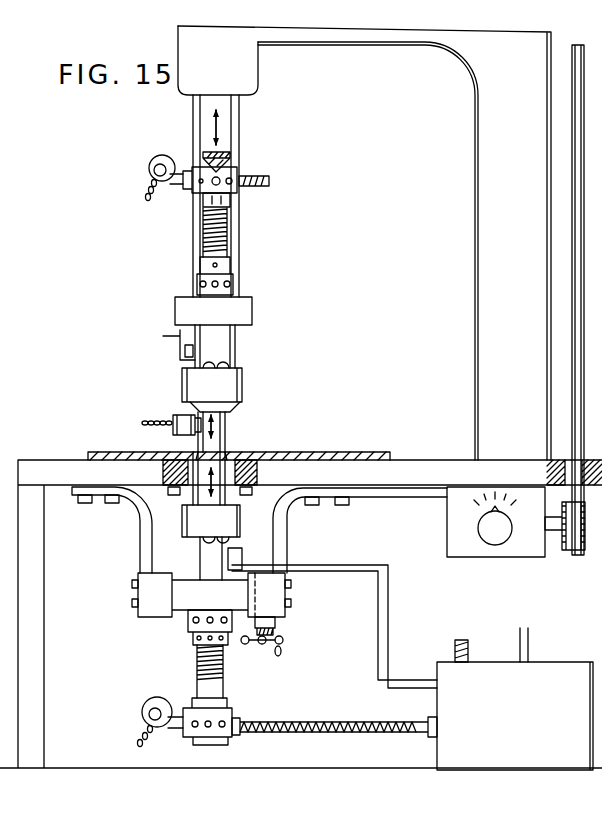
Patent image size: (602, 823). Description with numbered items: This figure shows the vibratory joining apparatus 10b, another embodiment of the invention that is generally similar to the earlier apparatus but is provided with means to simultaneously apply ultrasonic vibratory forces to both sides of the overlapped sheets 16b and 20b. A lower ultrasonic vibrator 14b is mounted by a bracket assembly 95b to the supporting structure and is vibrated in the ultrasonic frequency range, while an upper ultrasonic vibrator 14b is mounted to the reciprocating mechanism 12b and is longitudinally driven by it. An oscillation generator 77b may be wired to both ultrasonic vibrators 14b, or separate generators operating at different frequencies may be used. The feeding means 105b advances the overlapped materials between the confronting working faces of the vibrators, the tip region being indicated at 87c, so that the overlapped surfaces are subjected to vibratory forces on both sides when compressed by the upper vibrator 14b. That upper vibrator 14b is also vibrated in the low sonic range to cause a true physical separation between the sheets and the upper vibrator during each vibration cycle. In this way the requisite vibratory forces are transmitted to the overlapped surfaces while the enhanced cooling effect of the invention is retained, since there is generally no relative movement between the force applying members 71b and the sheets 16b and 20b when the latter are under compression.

The vibratory joining apparatus 10b is at (176, 44).
The reciprocating mechanism 12b is at (424, 47).
The ultrasonic vibrator 14b is at (241, 234).
The feeding means 105b is at (186, 411).
The force applying member 71b is at (245, 395).
The sheet 20b is at (113, 452).
The tool tip 87c is at (241, 452).
The sheet 16b is at (354, 457).
The bracket assembly 95b is at (288, 513).
The oscillation generator 77b is at (491, 661).